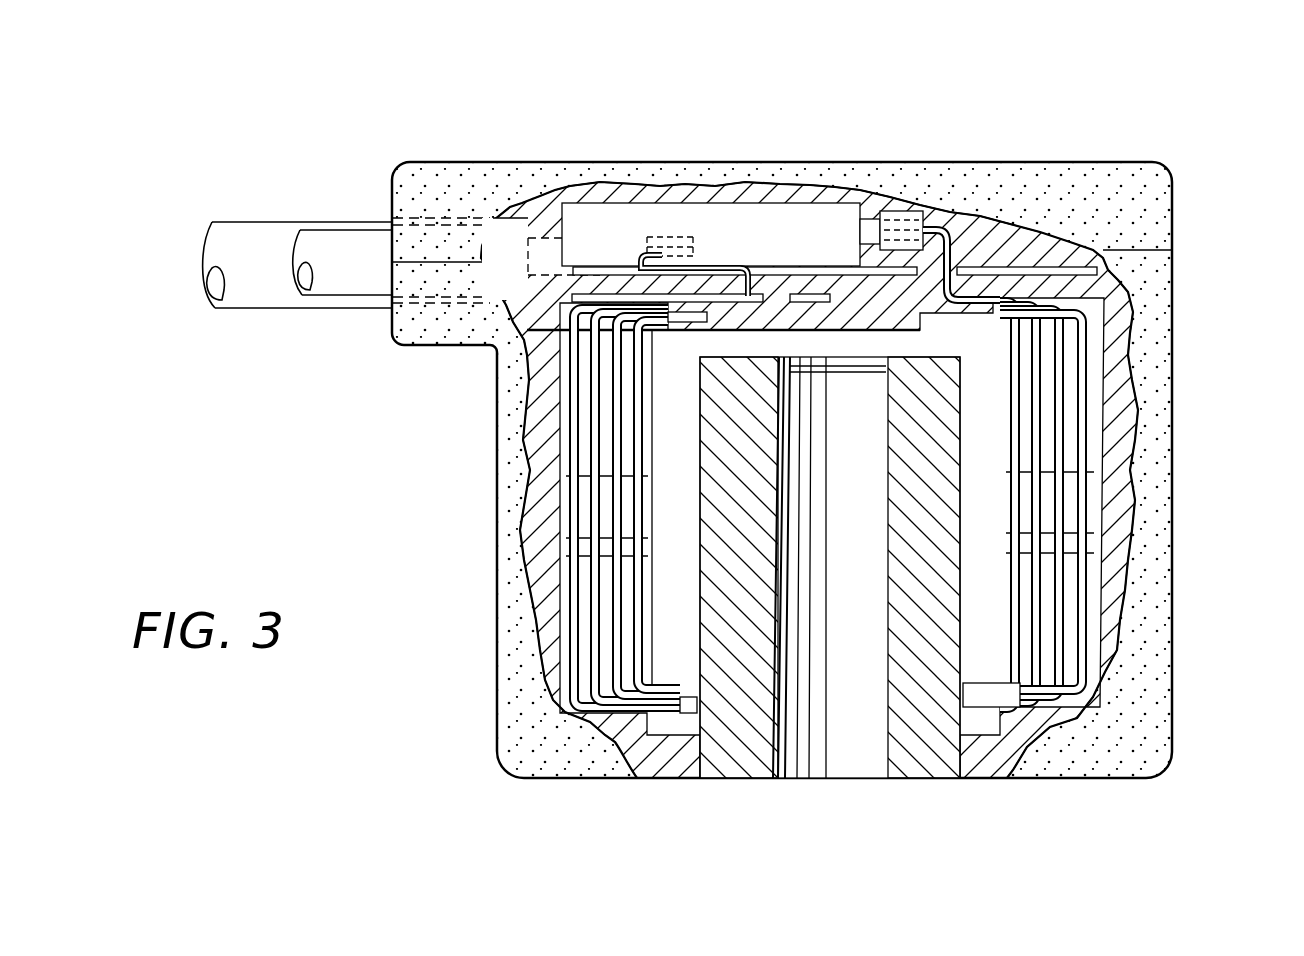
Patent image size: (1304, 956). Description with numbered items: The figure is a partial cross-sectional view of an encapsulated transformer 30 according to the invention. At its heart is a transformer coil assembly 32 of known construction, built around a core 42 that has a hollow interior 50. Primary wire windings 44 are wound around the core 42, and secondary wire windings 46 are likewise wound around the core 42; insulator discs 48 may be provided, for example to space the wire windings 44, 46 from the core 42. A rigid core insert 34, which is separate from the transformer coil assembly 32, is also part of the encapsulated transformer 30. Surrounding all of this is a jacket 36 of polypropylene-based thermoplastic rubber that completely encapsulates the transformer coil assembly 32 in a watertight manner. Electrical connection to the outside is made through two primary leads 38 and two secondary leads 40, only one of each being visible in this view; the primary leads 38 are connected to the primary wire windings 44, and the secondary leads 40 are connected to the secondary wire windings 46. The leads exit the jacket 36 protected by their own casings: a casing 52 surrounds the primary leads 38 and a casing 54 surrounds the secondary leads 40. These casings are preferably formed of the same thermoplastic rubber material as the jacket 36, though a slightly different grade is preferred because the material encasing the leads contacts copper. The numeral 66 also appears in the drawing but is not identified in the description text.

The encapsulated transformer 30 is at (1042, 148).
The transformer coil assembly 32 is at (984, 715).
The rigid core insert 34 is at (740, 784).
The jacket 36 is at (558, 785).
The primary lead 38 is at (867, 203).
The secondary lead 40 is at (641, 238).
The core 42 is at (993, 500).
The primary wire windings 44 is at (1083, 604).
The secondary wire windings 46 is at (645, 417).
The insulator disc 48 is at (1097, 262).
The hollow interior 50 is at (962, 672).
The casing 52 is at (342, 240).
The casing 54 is at (259, 298).
The core laminations 66 is at (791, 783).